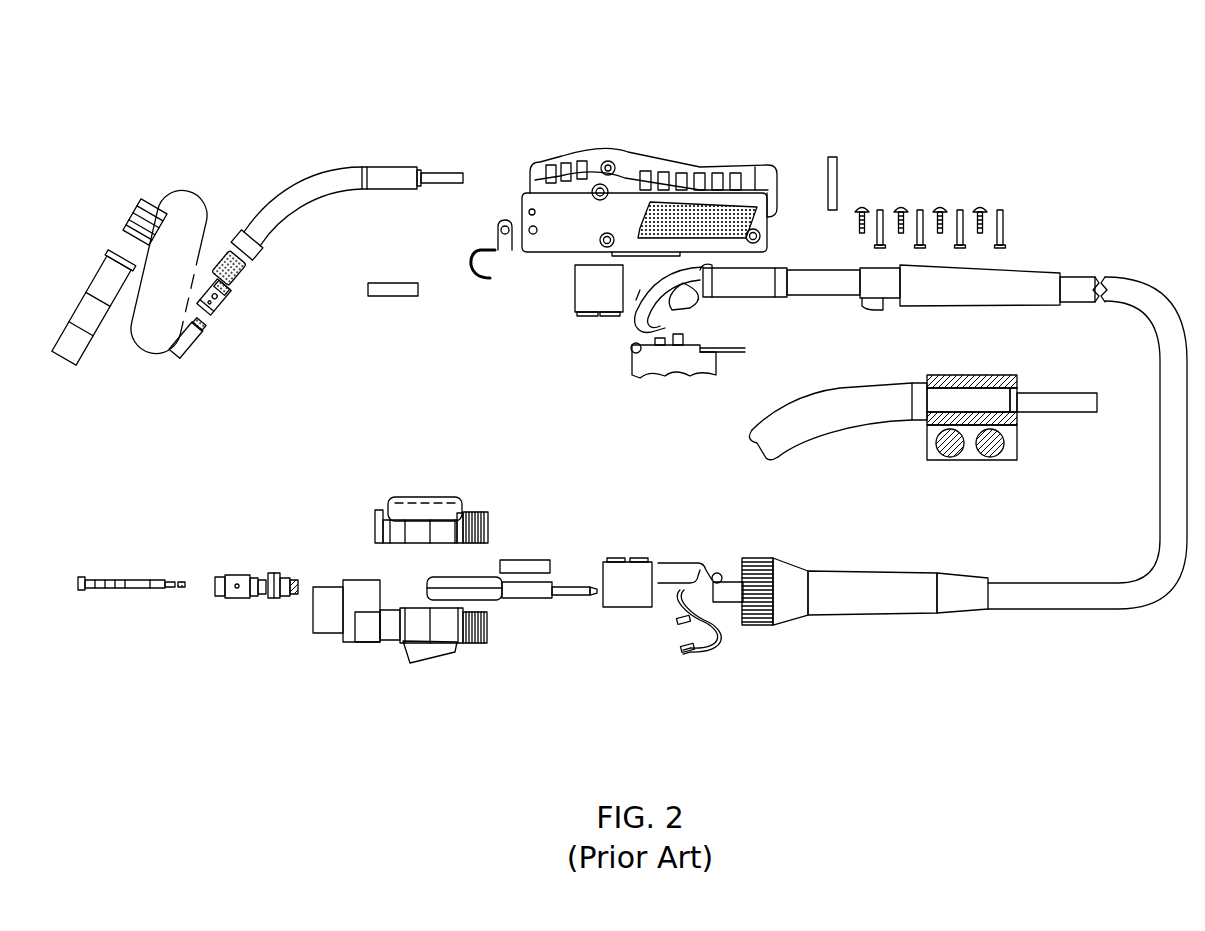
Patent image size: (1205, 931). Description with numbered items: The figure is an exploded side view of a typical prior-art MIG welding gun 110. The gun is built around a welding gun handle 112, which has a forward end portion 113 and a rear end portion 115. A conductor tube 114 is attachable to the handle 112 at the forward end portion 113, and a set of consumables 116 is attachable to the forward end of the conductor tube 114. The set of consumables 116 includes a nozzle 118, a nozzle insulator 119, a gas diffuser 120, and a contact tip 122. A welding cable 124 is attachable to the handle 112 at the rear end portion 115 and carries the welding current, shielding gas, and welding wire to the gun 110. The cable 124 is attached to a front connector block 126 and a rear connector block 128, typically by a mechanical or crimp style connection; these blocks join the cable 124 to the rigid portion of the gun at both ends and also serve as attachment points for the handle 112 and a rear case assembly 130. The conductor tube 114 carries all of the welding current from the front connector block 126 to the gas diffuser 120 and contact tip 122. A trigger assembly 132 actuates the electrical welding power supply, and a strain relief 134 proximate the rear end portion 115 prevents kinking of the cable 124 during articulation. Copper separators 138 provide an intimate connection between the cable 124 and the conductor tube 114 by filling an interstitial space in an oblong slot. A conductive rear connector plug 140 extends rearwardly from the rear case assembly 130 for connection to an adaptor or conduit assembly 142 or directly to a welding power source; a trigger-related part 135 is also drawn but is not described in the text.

The MIG welding gun 110 is at (947, 75).
The welding gun handle 112 is at (663, 113).
The forward end portion 113 is at (540, 160).
The rear end portion 115 is at (768, 165).
The conductor tube 114 is at (288, 190).
The set of consumables 116 is at (140, 415).
The nozzle 118 is at (92, 272).
The nozzle insulator 119 is at (148, 200).
The gas diffuser 120 is at (226, 302).
The contact tip 122 is at (193, 352).
The welding cable 124 is at (1160, 362).
The front connector block 126 is at (572, 280).
The rear connector block 128 is at (640, 607).
The rear case assembly 130 is at (432, 497).
The trigger assembly 132 is at (630, 350).
The strain relief 134 is at (1035, 265).
The trigger spring 135 is at (665, 650).
The copper separators 138 is at (392, 298).
The rear connector plug 140 is at (232, 575).
The adaptor or conduit assembly 142 is at (130, 580).